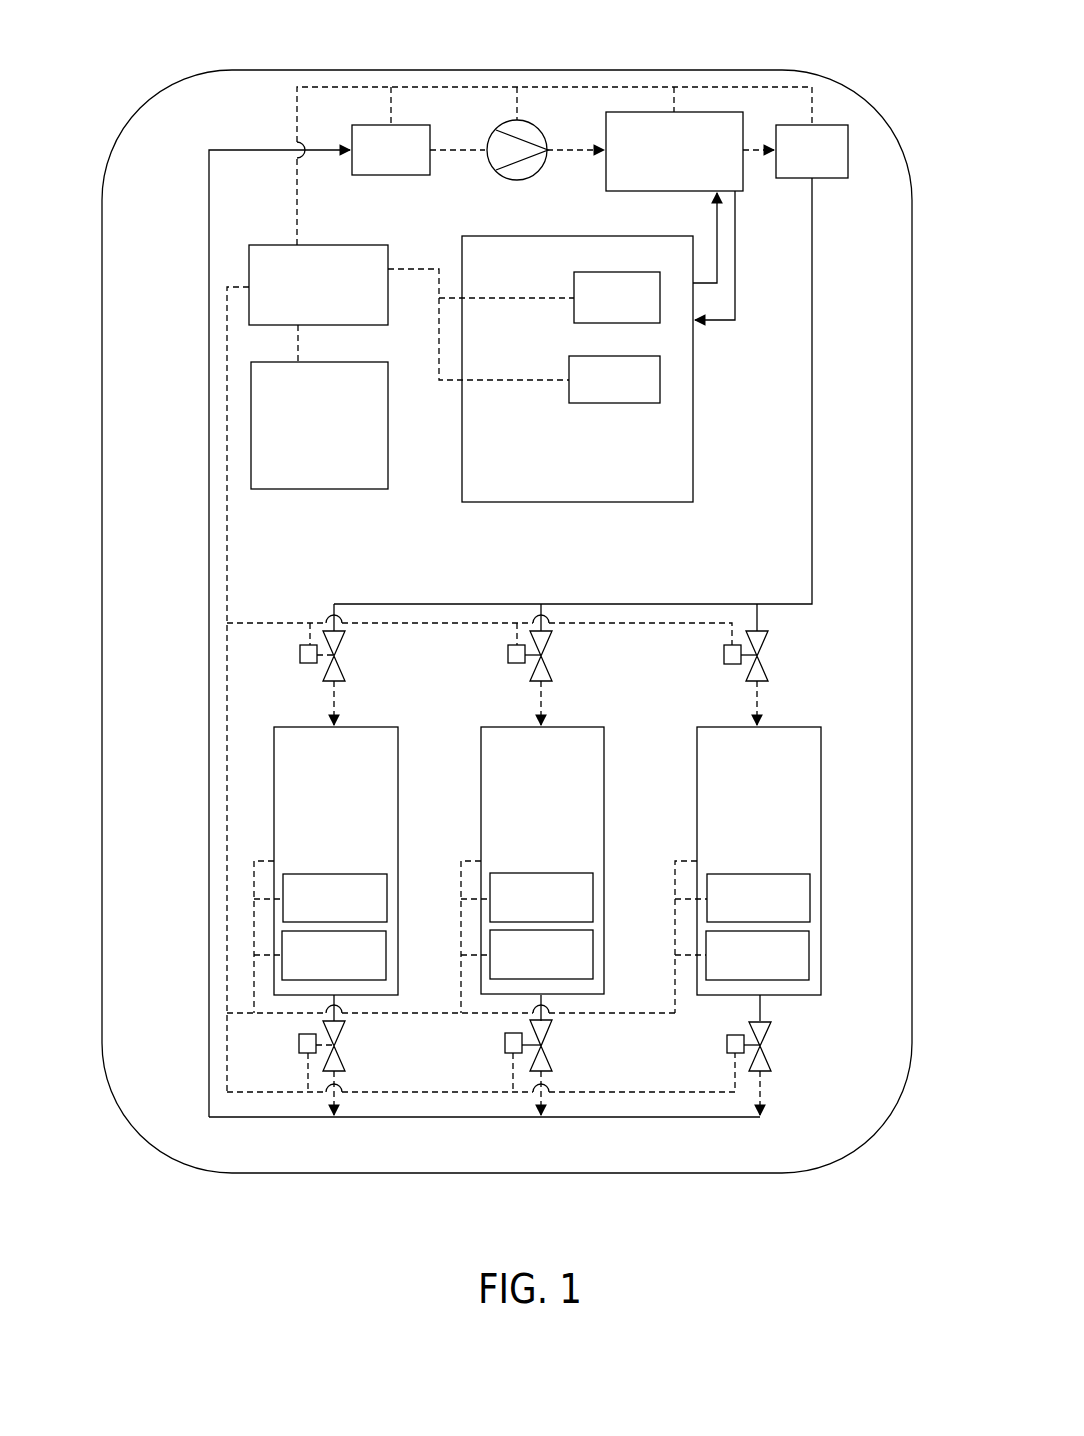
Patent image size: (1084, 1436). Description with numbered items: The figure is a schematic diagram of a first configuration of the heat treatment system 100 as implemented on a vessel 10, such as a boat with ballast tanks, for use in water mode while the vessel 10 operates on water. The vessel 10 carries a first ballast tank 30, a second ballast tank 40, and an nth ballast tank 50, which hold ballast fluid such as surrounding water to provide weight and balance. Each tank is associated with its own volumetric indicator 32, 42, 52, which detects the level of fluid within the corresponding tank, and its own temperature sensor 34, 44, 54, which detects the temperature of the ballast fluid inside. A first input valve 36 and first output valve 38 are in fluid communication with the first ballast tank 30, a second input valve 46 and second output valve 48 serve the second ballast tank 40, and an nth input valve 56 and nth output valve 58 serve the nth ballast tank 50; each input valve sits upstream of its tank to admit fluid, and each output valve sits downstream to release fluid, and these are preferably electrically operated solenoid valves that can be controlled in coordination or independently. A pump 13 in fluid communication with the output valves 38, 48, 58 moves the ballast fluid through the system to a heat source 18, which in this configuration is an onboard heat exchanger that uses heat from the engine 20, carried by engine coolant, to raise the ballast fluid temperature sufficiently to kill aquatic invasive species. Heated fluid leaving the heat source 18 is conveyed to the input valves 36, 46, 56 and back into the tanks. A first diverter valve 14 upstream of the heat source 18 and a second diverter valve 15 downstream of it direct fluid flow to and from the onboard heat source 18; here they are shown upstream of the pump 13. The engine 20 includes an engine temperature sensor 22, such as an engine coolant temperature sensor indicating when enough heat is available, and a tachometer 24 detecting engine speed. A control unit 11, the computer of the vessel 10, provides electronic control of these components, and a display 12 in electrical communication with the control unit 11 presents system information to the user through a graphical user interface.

The heat treatment system 100 is at (195, 42).
The vessel 10 is at (143, 107).
The control unit 11 is at (260, 245).
The display 12 is at (251, 392).
The pump 13 is at (530, 122).
The first diverter valve 14 is at (392, 125).
The second diverter valve 15 is at (832, 125).
The heat source 18 is at (638, 112).
The engine 20 is at (670, 502).
The engine temperature sensor 22 is at (650, 323).
The tachometer 24 is at (648, 403).
The first ballast tank 30 is at (368, 727).
The volumetric indicator 32 is at (387, 943).
The temperature sensor 34 is at (370, 874).
The first input valve 36 is at (338, 660).
The first output valve 38 is at (338, 1048).
The second ballast tank 40 is at (580, 727).
The volumetric indicator 42 is at (593, 950).
The temperature sensor 44 is at (580, 873).
The second input valve 46 is at (545, 660).
The second output valve 48 is at (545, 1048).
The nth ballast tank 50 is at (800, 727).
The volumetric indicator 52 is at (810, 950).
The temperature sensor 54 is at (797, 874).
The nth input valve 56 is at (761, 660).
The nth output valve 58 is at (764, 1048).